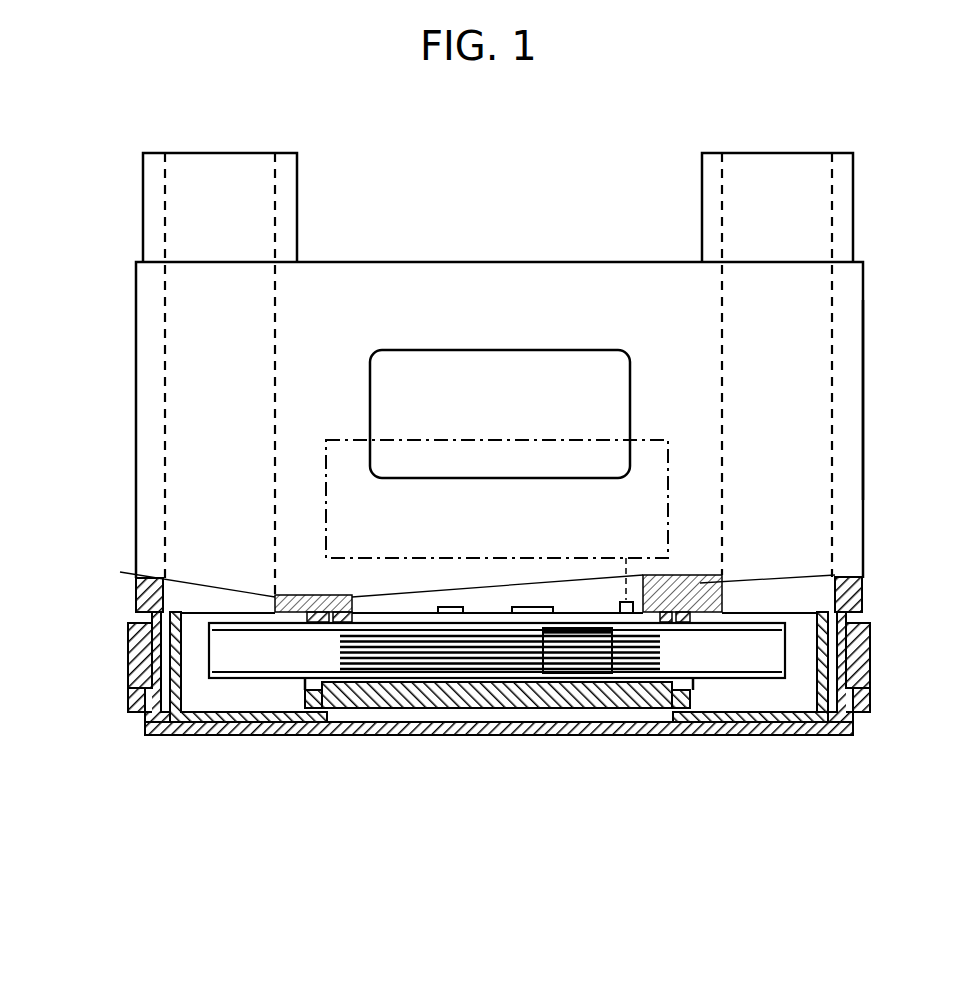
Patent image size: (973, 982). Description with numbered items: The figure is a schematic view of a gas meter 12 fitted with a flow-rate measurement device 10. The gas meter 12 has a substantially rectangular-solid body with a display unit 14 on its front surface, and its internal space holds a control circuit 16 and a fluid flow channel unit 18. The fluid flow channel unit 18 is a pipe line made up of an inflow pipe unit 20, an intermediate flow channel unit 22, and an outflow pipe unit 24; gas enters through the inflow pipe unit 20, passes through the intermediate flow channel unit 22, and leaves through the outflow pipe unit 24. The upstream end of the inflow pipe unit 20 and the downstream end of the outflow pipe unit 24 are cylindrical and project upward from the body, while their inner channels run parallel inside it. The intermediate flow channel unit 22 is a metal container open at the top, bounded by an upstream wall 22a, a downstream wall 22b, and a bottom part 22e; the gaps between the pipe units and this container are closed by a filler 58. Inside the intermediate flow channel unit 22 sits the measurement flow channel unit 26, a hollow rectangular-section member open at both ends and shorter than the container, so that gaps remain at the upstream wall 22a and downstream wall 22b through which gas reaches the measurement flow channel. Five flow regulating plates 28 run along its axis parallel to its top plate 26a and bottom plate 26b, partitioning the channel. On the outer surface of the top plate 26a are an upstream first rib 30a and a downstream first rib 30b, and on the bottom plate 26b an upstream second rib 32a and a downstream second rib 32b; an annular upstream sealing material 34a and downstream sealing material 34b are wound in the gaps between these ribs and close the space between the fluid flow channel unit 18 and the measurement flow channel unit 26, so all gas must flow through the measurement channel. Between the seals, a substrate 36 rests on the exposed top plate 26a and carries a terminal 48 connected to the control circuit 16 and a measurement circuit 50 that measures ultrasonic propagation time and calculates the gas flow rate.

The flow-rate measurement device 10 is at (803, 642).
The gas meter 12 is at (862, 207).
The display unit 14 is at (473, 350).
The control circuit 16 is at (668, 530).
The fluid flow channel unit 18 is at (160, 490).
The inflow pipe unit 20 is at (160, 445).
The intermediate flow channel unit 22 is at (743, 735).
The upstream wall 22a is at (143, 712).
The downstream wall 22b is at (870, 706).
The bottom part 22e is at (545, 735).
The outflow pipe unit 24 is at (862, 367).
The measurement flow channel unit 26 is at (178, 720).
The top plate 26a is at (769, 622).
The bottom plate 26b is at (777, 678).
The flow regulating plates 28 is at (483, 690).
The upstream first rib 30a is at (275, 595).
The downstream first rib 30b is at (682, 602).
The upstream second rib 32a is at (305, 690).
The downstream second rib 32b is at (693, 690).
The upstream sealing material 34a is at (318, 705).
The downstream sealing material 34b is at (680, 685).
The substrate 36 is at (440, 615).
The terminal 48 is at (627, 613).
The measurement circuit 50 is at (538, 625).
The filler 58 is at (136, 606).